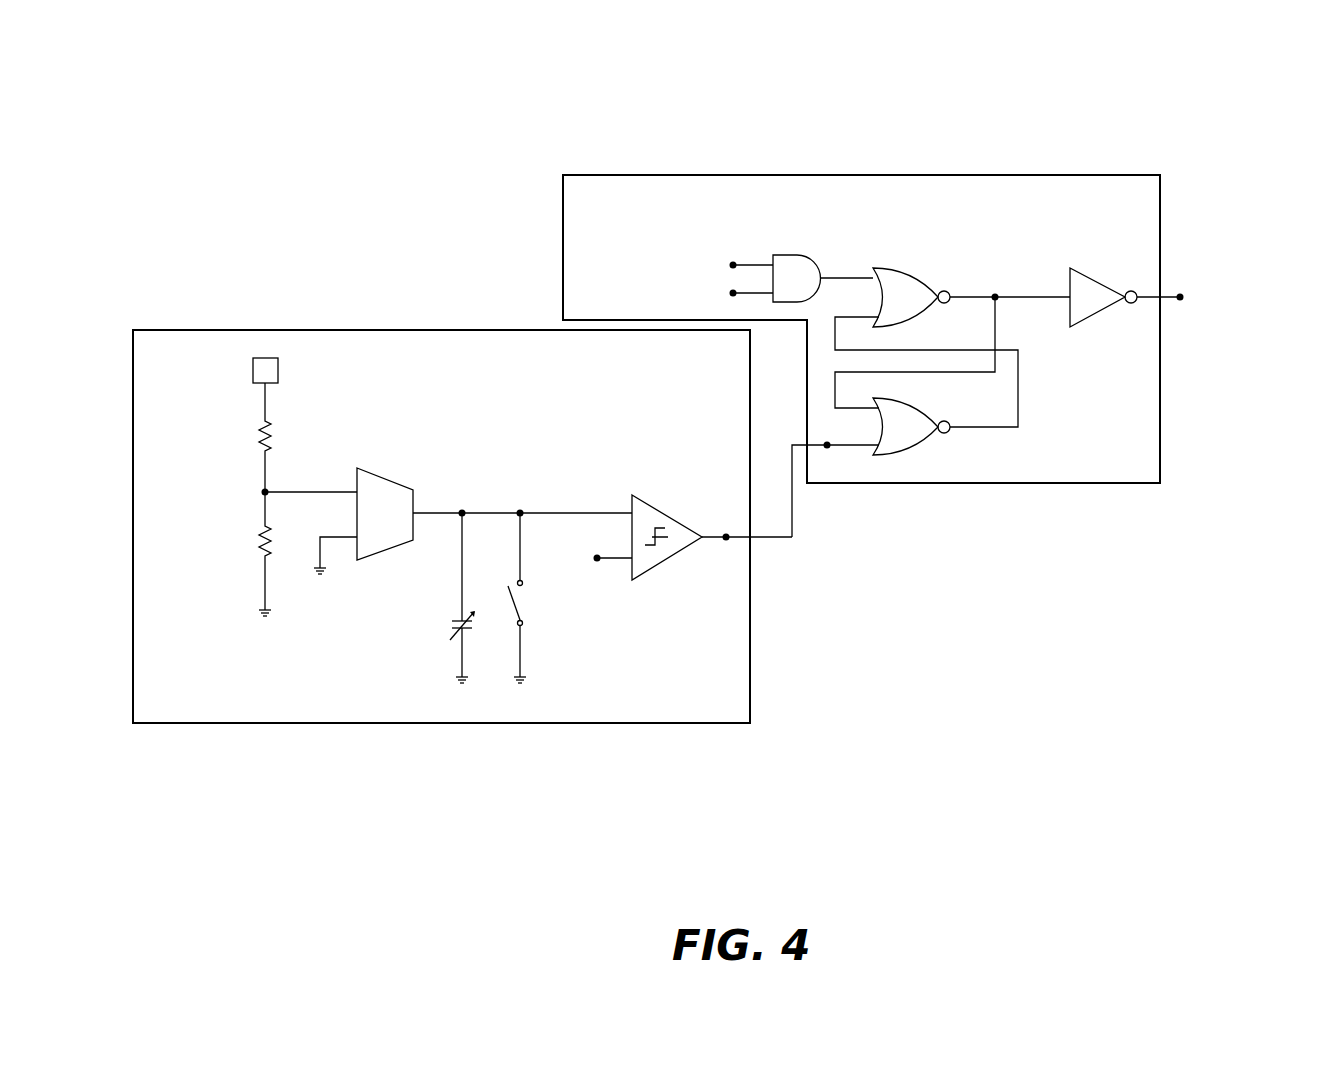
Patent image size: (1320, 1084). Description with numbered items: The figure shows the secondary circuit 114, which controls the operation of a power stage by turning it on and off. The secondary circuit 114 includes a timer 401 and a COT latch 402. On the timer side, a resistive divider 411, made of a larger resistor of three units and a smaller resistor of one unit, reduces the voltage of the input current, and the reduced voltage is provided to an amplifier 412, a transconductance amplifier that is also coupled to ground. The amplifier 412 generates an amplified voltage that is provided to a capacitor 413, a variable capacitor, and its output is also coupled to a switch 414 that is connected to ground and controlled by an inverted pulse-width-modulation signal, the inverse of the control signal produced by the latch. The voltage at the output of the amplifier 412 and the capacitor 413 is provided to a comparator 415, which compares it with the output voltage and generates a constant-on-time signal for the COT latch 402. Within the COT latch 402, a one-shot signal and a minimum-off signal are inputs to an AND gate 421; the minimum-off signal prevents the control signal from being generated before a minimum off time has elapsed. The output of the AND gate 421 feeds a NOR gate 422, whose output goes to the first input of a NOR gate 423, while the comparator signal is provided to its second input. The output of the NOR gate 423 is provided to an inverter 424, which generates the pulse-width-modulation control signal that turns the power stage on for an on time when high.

The secondary circuit 114 is at (250, 112).
The timer 401 is at (407, 330).
The COT latch 402 is at (595, 175).
The resistive divider 411 is at (250, 458).
The amplifier 412 is at (400, 488).
The capacitor 413 is at (446, 604).
The switch 414 is at (534, 625).
The comparator 415 is at (637, 495).
The AND gate 421 is at (786, 255).
The NOR gate 422 is at (892, 268).
The NOR gate 423 is at (883, 453).
The inverter 424 is at (1105, 312).